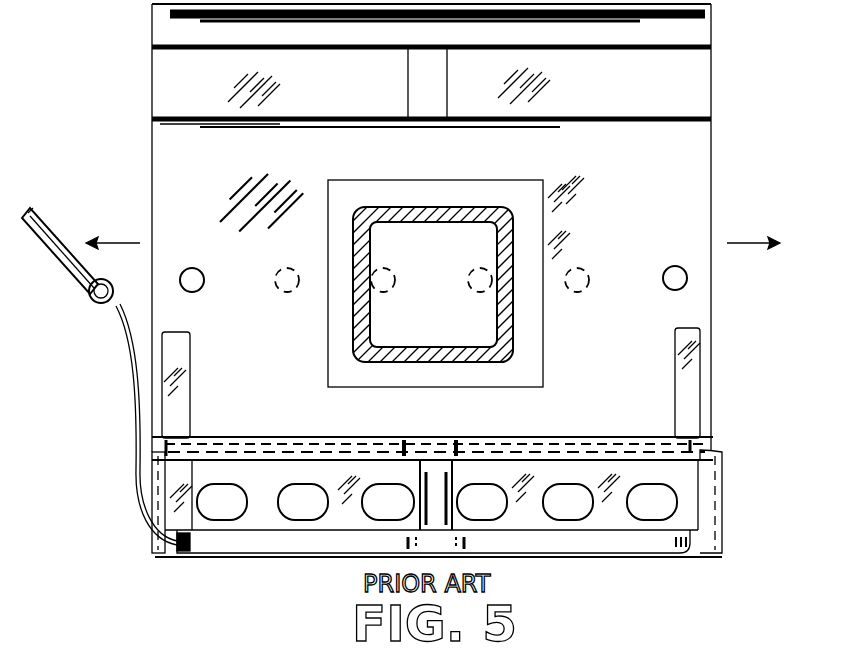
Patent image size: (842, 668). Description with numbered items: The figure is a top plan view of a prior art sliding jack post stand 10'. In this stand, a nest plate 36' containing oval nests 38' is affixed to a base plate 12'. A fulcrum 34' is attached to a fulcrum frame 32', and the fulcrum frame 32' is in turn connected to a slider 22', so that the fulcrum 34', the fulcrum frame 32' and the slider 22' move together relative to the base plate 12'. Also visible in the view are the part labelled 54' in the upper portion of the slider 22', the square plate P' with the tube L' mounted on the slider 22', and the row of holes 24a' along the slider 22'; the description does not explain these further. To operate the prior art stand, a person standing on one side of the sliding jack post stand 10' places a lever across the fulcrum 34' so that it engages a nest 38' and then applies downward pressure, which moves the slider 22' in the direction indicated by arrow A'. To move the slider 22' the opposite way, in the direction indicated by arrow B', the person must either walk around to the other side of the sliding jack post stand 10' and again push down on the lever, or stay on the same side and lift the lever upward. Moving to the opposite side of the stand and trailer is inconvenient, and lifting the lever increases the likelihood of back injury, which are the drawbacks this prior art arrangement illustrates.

The sliding jack post stand 10' is at (416, 376).
The base plate 12' is at (464, 503).
The slider 22' is at (410, 115).
The holes 24a' is at (433, 262).
The fulcrum frame 32' is at (439, 561).
The fulcrum 34' is at (434, 502).
The nest plate 36' is at (605, 538).
The oval nests 38' is at (262, 538).
The upper compartment 54' is at (390, 83).
The tube L' is at (440, 253).
The square plate P' is at (458, 283).
The arrow A' is at (753, 228).
The arrow B' is at (113, 228).